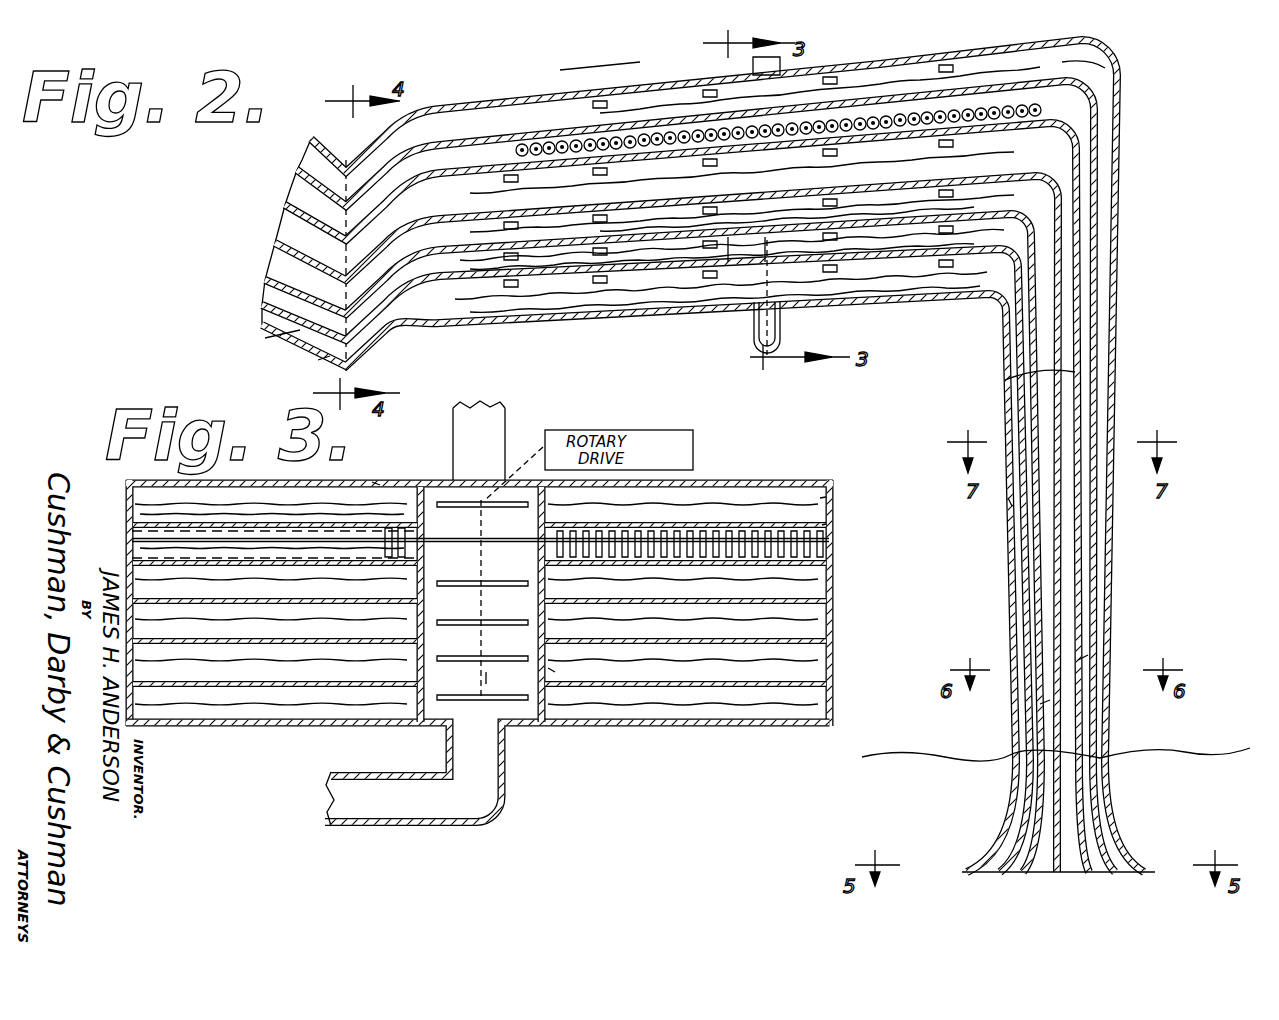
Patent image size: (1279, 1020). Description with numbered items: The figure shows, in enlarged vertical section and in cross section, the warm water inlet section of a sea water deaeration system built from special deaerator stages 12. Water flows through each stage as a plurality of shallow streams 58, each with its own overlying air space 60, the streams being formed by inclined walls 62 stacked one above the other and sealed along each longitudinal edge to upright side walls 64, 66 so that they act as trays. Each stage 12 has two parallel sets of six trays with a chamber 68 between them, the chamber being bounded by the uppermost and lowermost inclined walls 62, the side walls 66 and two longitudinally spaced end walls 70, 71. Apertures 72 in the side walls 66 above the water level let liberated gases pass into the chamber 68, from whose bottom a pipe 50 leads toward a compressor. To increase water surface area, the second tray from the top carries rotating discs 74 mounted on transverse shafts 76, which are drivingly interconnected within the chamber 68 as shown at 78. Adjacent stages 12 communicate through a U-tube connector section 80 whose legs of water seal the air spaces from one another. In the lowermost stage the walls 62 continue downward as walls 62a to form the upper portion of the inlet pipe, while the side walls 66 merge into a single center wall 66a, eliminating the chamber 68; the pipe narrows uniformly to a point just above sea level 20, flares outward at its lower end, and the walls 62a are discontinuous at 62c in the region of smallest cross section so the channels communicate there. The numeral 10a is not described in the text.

In FIG. 2, the support leg 10a is at (1012, 496).
In FIG. 2, the deaerator stage 12 is at (620, 60).
In FIG. 3, the deaerator stage 12 is at (373, 486).
In FIG. 2, the sea level 20 is at (1244, 752).
In FIG. 2, the pipe 50 is at (752, 62).
In FIG. 3, the pipe 50 is at (507, 427).
In FIG. 2, the shallow streams 58 is at (458, 118).
In FIG. 3, the shallow streams 58 is at (822, 712).
In FIG. 2, the air space 60 is at (498, 160).
In FIG. 3, the air space 60 is at (822, 525).
In FIG. 2, the inclined walls 62 is at (655, 165).
In FIG. 3, the inclined walls 62 is at (783, 522).
In FIG. 2, the walls 62a is at (1080, 386).
In FIG. 2, the discontinuous region of walls 62c is at (1078, 672).
In FIG. 3, the side wall 64 is at (828, 618).
In FIG. 3, the side wall 66 is at (538, 720).
In FIG. 2, the center wall 66a is at (1088, 340).
In FIG. 3, the chamber 68 is at (520, 650).
In FIG. 2, the end wall 70 is at (262, 338).
In FIG. 2, the end wall 71 is at (1097, 66).
In FIG. 2, the apertures 72 is at (968, 132).
In FIG. 3, the apertures 72 is at (551, 668).
In FIG. 2, the rotating discs 74 is at (1080, 105).
In FIG. 3, the rotating discs 74 is at (400, 527).
In FIG. 3, the shafts 76 is at (490, 496).
In FIG. 3, the drive interconnection 78 is at (488, 678).
In FIG. 2, the U-tube connector section 80 is at (320, 358).